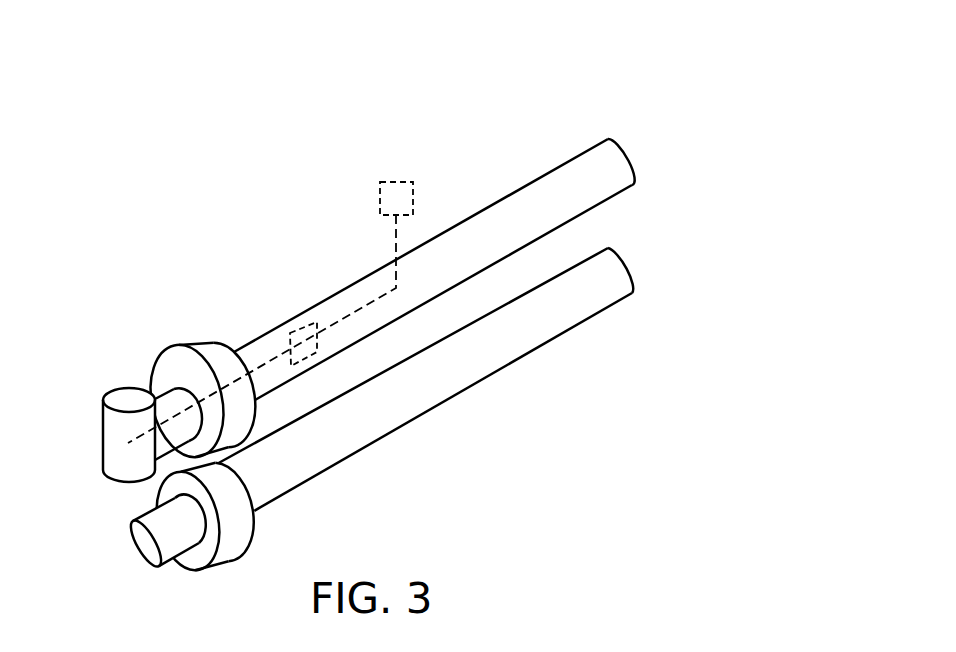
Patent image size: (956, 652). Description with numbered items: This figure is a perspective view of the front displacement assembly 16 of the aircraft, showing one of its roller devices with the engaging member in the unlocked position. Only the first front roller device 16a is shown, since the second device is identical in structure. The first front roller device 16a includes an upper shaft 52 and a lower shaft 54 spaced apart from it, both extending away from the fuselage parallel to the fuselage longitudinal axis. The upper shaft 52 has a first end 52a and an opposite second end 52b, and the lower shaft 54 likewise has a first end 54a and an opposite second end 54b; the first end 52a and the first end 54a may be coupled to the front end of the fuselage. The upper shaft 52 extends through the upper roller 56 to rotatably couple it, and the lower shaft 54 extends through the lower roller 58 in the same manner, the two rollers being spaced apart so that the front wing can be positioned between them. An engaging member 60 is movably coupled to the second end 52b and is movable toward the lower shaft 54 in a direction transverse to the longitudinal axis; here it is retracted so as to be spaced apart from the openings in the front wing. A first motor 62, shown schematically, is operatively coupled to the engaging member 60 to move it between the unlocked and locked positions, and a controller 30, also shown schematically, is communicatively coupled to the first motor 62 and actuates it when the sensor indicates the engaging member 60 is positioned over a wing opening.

The front displacement assembly 16 is at (375, 310).
The first front roller device 16a is at (473, 246).
The controller 30 is at (393, 182).
The upper shaft 52 is at (348, 284).
The first end of the upper shaft 52a is at (636, 161).
The second end of the upper shaft 52b is at (152, 488).
The lower shaft 54 is at (451, 398).
The first end of the lower shaft 54a is at (636, 273).
The second end of the lower shaft 54b is at (137, 556).
The upper roller 56 is at (185, 346).
The lower roller 58 is at (236, 557).
The engaging member 60 is at (103, 431).
The first motor 62 is at (301, 320).